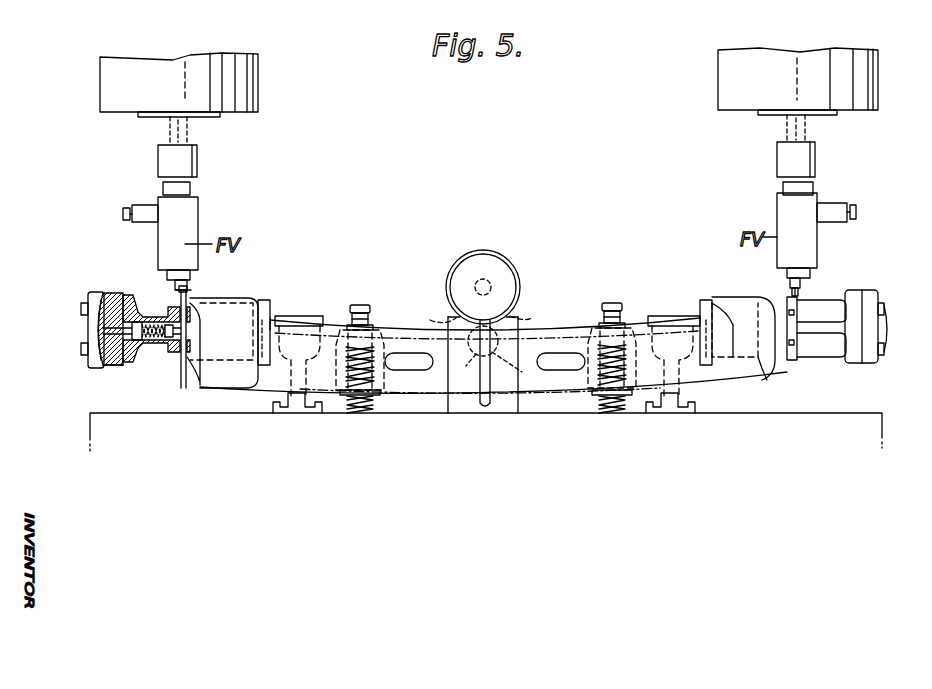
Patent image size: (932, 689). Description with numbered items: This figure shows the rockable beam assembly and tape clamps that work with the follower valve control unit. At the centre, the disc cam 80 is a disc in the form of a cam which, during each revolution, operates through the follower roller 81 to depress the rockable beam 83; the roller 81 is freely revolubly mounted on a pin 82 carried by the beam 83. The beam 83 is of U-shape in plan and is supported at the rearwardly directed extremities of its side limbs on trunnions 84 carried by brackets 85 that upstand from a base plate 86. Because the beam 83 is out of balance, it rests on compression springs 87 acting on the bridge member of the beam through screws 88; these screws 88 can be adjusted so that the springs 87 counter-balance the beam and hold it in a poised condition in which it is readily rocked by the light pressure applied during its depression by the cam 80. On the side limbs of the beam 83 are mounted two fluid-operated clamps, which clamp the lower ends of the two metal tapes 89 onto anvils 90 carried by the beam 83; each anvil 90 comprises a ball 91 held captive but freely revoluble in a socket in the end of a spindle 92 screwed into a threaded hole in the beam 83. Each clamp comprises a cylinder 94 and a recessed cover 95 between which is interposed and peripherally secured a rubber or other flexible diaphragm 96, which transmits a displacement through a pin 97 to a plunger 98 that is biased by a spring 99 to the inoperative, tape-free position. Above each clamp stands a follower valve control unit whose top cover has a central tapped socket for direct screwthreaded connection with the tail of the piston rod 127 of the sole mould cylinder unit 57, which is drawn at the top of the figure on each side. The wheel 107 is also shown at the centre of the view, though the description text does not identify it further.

The sole mould cylinder unit 57 is at (95, 91).
The piston rod 127 is at (170, 130).
The disc cam 80 is at (469, 358).
The follower roller 81 is at (476, 354).
The pin 82 is at (518, 371).
The rockable beam 83 is at (732, 372).
The trunnions 84 is at (191, 362).
The brackets 85 is at (297, 317).
The base plate 86 is at (137, 412).
The compression springs 87 is at (365, 408).
The screws 88 is at (356, 305).
The metal tapes 89 is at (174, 293).
The anvils 90 is at (189, 338).
The ball 91 is at (197, 330).
The spindle 92 is at (185, 362).
The cylinder 94 is at (180, 318).
The recessed cover 95 is at (95, 358).
The flexible diaphragm 96 is at (108, 293).
The pin 97 is at (115, 363).
The plunger 98 is at (123, 300).
The spring 99 is at (186, 327).
The wheel 107 is at (495, 287).